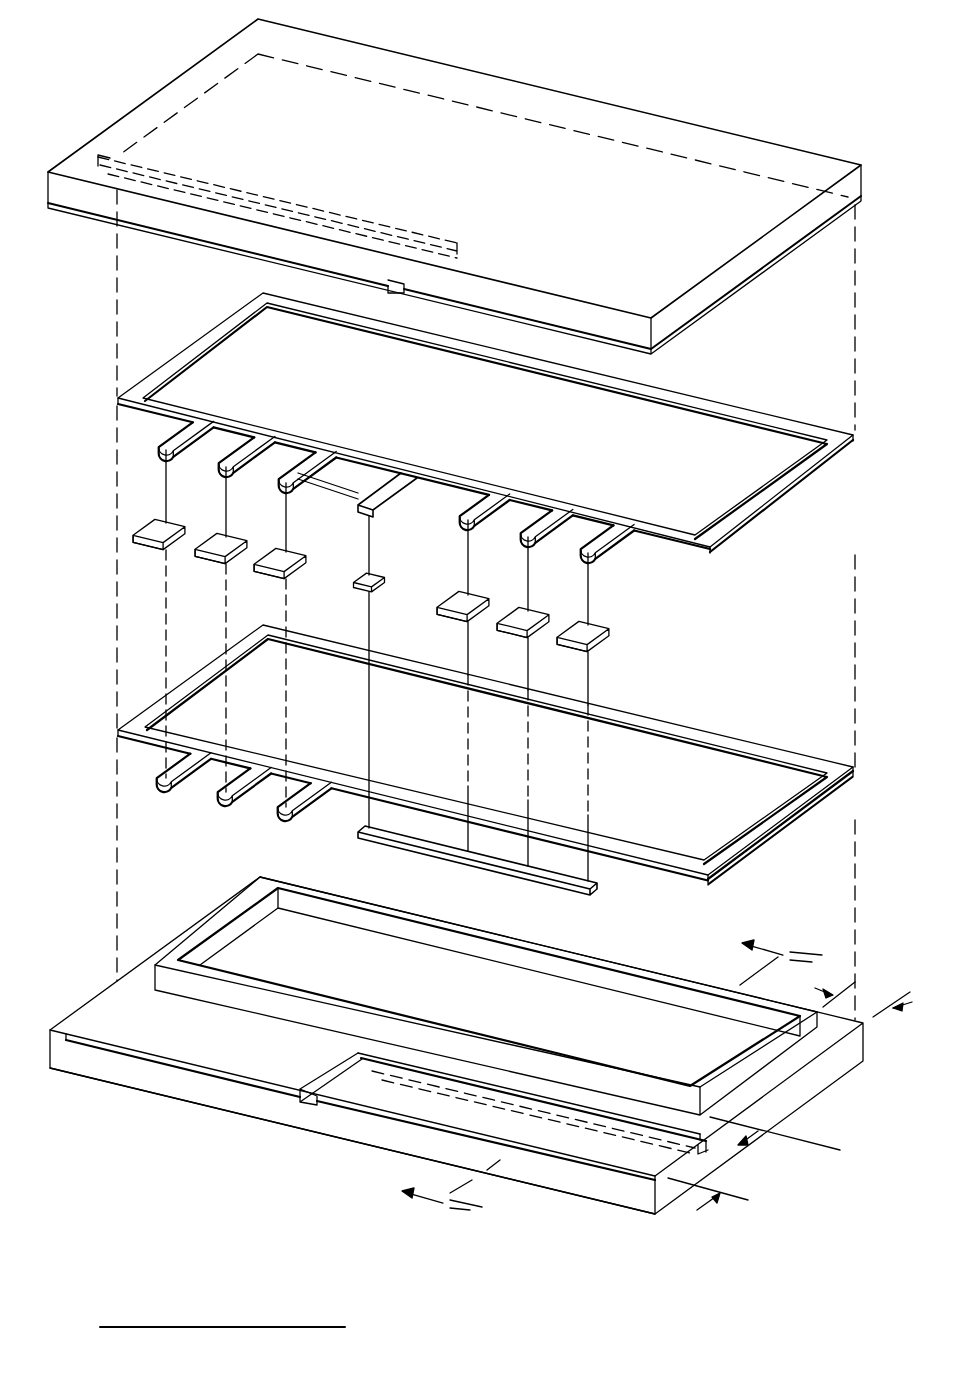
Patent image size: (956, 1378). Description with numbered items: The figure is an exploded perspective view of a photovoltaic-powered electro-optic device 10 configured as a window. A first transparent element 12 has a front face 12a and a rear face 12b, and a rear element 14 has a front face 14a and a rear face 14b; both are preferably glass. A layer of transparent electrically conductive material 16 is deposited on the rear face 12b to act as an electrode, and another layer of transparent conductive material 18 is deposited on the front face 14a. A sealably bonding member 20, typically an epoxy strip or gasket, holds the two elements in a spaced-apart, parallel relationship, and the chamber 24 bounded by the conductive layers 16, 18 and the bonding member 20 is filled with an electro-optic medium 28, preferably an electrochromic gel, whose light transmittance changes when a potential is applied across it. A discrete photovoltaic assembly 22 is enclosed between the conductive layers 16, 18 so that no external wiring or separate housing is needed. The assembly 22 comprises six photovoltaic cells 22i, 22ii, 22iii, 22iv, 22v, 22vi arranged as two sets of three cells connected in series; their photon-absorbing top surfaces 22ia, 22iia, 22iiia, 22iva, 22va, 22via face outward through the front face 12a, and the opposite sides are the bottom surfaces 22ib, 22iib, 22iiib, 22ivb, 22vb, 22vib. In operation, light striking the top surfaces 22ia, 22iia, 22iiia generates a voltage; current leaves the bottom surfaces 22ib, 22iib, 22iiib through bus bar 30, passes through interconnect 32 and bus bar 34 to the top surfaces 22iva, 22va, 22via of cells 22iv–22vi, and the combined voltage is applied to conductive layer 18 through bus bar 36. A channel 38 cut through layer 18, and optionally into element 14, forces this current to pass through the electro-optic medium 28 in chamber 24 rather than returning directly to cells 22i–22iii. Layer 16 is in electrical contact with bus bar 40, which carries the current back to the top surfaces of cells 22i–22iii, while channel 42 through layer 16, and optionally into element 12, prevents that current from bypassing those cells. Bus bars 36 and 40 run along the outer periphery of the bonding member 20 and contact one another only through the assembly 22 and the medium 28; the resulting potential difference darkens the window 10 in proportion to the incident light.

The photovoltaic-powered electro-optic device 10 is at (693, 90).
The first transparent element 12 is at (58, 186).
The front face of first transparent element 12a is at (166, 104).
The rear face of first transparent element 12b is at (82, 212).
The layer of transparent electrically conductive material 16 is at (184, 240).
The channel 42 is at (396, 284).
The bus bar 40 is at (808, 463).
The bus bar 34 is at (158, 440).
The photovoltaic assembly 22 is at (80, 480).
The photovoltaic cell 22i is at (626, 634).
The photovoltaic cell 22ii is at (509, 592).
The photovoltaic cell 22iii is at (478, 584).
The photovoltaic cell 22iv is at (292, 535).
The photovoltaic cell 22v is at (209, 534).
The photovoltaic cell 22vi is at (178, 510).
The top surface of photovoltaic cell 22i 22ia is at (592, 626).
The bottom surface of photovoltaic cell 22i 22ib is at (591, 643).
The top surface of photovoltaic cell 22ii 22iia is at (531, 613).
The bottom surface of photovoltaic cell 22ii 22iib is at (540, 629).
The top surface of photovoltaic cell 22iii 22iiia is at (461, 595).
The bottom surface of photovoltaic cell 22iii 22iiib is at (477, 613).
The top surface of photovoltaic cell 22iv 22iva is at (292, 556).
The bottom surface of photovoltaic cell 22iv 22ivb is at (282, 579).
The top surface of photovoltaic cell 22v 22va is at (233, 546).
The bottom surface of photovoltaic cell 22v 22vb is at (221, 564).
The top surface of photovoltaic cell 22vi 22via is at (152, 527).
The bottom surface of photovoltaic cell 22vi 22vib is at (138, 549).
The interconnect 32 is at (367, 592).
The bus bar 36 is at (125, 726).
The bus bar 30 is at (360, 834).
The rear element 14 is at (62, 1060).
The front face of rear element 14a is at (78, 1038).
The rear face of rear element 14b is at (120, 1087).
The layer of transparent electrically conductive material 18 is at (223, 1078).
The channel 38 is at (307, 1108).
The sealably bonding member 20 is at (200, 938).
The electro-optic medium 28 is at (583, 1000).
The chamber 24 is at (416, 991).